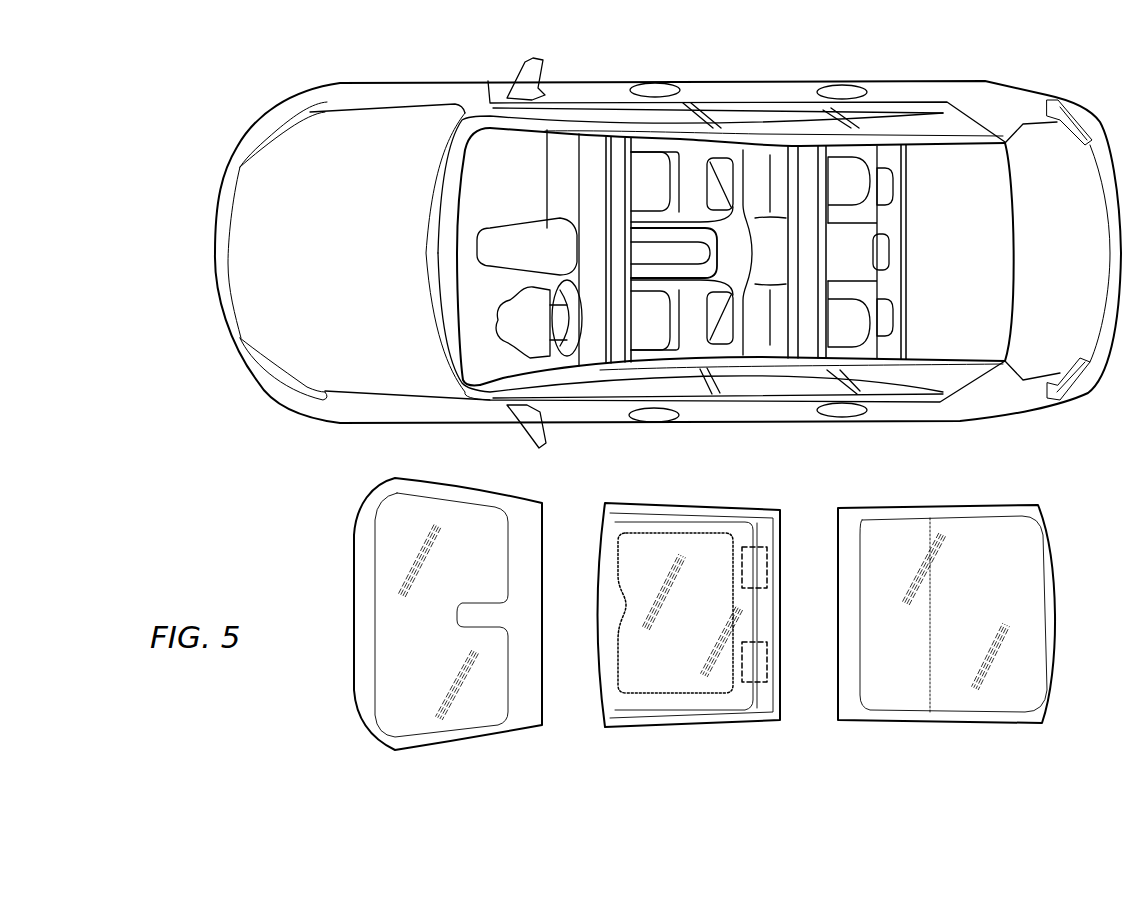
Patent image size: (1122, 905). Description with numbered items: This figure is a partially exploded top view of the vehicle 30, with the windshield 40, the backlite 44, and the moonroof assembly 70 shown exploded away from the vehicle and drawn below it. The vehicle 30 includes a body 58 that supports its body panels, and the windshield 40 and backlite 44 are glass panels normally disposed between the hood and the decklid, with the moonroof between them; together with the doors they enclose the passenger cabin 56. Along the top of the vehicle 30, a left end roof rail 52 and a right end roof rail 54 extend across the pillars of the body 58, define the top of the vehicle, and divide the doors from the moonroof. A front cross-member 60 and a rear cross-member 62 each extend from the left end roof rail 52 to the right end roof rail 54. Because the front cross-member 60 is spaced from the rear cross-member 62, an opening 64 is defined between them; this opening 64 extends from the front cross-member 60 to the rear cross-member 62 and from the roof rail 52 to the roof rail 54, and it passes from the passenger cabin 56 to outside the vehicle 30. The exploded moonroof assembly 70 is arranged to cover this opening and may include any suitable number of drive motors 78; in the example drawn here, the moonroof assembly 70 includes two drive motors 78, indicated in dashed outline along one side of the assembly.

The vehicle 30 is at (598, 49).
The windshield 40 is at (483, 740).
The backlite 44 is at (985, 727).
The left end roof rail 52 is at (675, 363).
The right end roof rail 54 is at (660, 137).
The passenger cabin 56 is at (737, 253).
The body 58 is at (980, 103).
The front cross-member 60 is at (603, 175).
The rear cross-member 62 is at (825, 185).
The opening 64 is at (667, 358).
The moonroof assembly 70 is at (737, 720).
The drive motor 78 is at (767, 653).